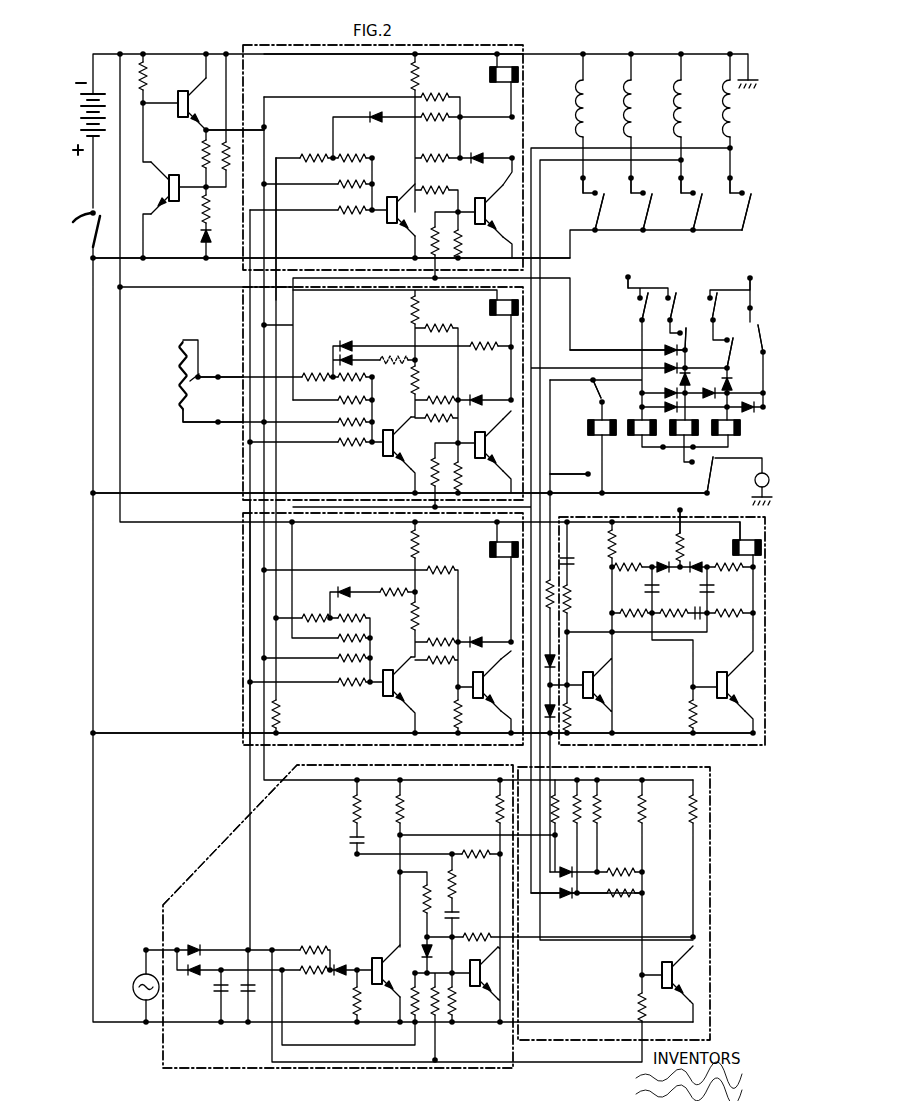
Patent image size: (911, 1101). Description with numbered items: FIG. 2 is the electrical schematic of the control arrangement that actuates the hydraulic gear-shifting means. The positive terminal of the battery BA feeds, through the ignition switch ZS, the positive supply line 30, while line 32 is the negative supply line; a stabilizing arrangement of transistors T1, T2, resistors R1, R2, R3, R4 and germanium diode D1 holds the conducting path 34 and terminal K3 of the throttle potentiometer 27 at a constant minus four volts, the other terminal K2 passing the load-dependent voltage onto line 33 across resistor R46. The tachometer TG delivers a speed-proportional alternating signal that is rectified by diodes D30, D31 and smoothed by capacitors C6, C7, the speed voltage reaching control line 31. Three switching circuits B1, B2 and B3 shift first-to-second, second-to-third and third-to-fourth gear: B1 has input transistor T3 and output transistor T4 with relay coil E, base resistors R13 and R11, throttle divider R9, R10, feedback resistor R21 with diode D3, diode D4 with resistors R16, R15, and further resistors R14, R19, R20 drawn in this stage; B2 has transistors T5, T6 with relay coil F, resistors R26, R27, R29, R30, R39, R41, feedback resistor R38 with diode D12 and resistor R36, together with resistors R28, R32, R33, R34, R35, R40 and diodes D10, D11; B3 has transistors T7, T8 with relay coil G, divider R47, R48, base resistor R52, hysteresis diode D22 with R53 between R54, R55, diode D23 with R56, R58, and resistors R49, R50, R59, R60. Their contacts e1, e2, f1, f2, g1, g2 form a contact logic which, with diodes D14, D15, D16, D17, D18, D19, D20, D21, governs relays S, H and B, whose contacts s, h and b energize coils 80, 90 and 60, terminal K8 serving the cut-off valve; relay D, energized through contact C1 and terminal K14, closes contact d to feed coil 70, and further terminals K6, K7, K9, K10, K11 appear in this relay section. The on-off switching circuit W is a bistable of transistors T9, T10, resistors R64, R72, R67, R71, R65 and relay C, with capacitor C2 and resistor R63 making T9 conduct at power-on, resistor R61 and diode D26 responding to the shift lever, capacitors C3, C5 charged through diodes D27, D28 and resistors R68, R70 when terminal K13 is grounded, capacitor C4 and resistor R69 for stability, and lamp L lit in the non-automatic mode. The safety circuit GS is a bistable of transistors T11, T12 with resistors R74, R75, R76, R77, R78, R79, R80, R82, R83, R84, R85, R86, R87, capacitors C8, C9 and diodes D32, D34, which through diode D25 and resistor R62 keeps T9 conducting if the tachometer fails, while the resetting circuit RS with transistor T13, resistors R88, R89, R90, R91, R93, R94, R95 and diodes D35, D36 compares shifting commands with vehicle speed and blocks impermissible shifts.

The battery BA is at (86, 115).
The ignition switch ZS is at (84, 214).
The resistor R1 is at (147, 74).
The resistor R2 is at (222, 160).
The resistor R3 is at (204, 149).
The resistor R4 is at (210, 206).
The stabilizing transistor T1 is at (190, 103).
The silicon control transistor T2 is at (173, 204).
The germanium diode D1 is at (211, 236).
The positive supply line 30 is at (183, 259).
The control line 31 is at (243, 599).
The negative supply line 32 is at (337, 54).
The conducting line 33 is at (278, 232).
The stabilized supply line 34 is at (267, 131).
The first switching circuit B1 is at (244, 45).
The second switching circuit B2 is at (242, 309).
The third switching circuit B3 is at (242, 716).
The resistor R14 is at (414, 65).
The resistor R15 is at (434, 94).
The feedback resistor R21 is at (435, 131).
The resistor R16 is at (446, 172).
The voltage divider resistor R9 is at (313, 153).
The voltage divider resistor R10 is at (350, 153).
The resistor R11 is at (335, 186).
The base resistor R13 is at (348, 215).
The resistor R19 is at (436, 232).
The resistor R20 is at (460, 238).
The feedback diode D3 is at (380, 122).
The diode D4 is at (479, 153).
The input transistor T3 is at (391, 224).
The output transistor T4 is at (486, 211).
The relay coil E is at (502, 84).
The variable resistor 27 is at (178, 378).
The terminal K2 is at (218, 374).
The terminal K3 is at (218, 425).
The resistor R26 is at (311, 375).
The resistor R27 is at (336, 381).
The resistor R28 is at (334, 404).
The resistor R29 is at (333, 430).
The base resistor R30 is at (345, 449).
The resistor R32 is at (480, 338).
The resistor R33 is at (382, 356).
The resistor R34 is at (412, 315).
The resistor R35 is at (430, 374).
The resistor R36 is at (439, 316).
The feedback resistor R38 is at (440, 391).
The resistor R39 is at (457, 412).
The resistor R40 is at (435, 461).
The resistor R41 is at (462, 476).
The diode D10 is at (336, 344).
The diode D11 is at (374, 364).
The diode D12 is at (490, 392).
The input transistor T5 is at (389, 460).
The output transistor T6 is at (481, 433).
The relay coil F is at (502, 317).
The resistor R46 is at (282, 708).
The voltage divider resistor R47 is at (308, 613).
The voltage divider resistor R48 is at (364, 608).
The resistor R49 is at (334, 643).
The resistor R50 is at (335, 663).
The base resistor R52 is at (348, 691).
The resistor R53 is at (381, 586).
The resistor R54 is at (420, 547).
The resistor R55 is at (429, 617).
The resistor R56 is at (439, 585).
The resistor R58 is at (458, 639).
The resistor R59 is at (437, 677).
The resistor R60 is at (454, 711).
The resistor R61 is at (547, 586).
The diode D22 is at (343, 584).
The diode D23 is at (493, 635).
The diode D25 is at (544, 712).
The diode D26 is at (556, 664).
The input transistor T7 is at (388, 701).
The output transistor T8 is at (473, 671).
The relay coil G is at (502, 558).
The terminal K13 is at (679, 511).
The terminal K14 is at (587, 474).
The capacitor C2 is at (574, 563).
The capacitor C3 is at (645, 590).
The capacitor C4 is at (695, 606).
The capacitor C5 is at (717, 590).
The resistor R63 is at (582, 600).
The base resistor R64 is at (572, 713).
The collector resistor R65 is at (610, 535).
The feedback resistor R67 is at (635, 620).
The protective resistor R68 is at (679, 542).
The resistor R69 is at (676, 620).
The resistor R70 is at (725, 563).
The feedback resistor R71 is at (727, 620).
The base resistor R72 is at (688, 709).
The diode D27 is at (659, 565).
The diode D28 is at (696, 564).
The transistor T9 is at (597, 689).
The transistor T10 is at (723, 703).
The relay C is at (762, 548).
The on-off switching circuit W is at (760, 740).
The coil of shifting valve 60 is at (734, 103).
The coil of pressure control valve 70 is at (587, 103).
The coil of cut-off valve 80 is at (635, 103).
The coil of turning valve 90 is at (685, 103).
The relay contact K6 is at (733, 176).
The relay contact K7 is at (586, 176).
The terminal K8 is at (634, 176).
The relay contact K9 is at (684, 176).
The terminal K10 is at (642, 264).
The terminal K11 is at (753, 276).
The relay contact d is at (604, 212).
The relay contact s is at (651, 212).
The relay contact h is at (702, 212).
The relay contact b is at (751, 212).
The normally closed contact g1 is at (738, 351).
The normally open contact g2 is at (632, 310).
The normally closed contact e1 is at (768, 325).
The normally open contact e2 is at (683, 311).
The normally closed contact f1 is at (693, 340).
The normally open contact f2 is at (724, 311).
The logic diode D14 is at (668, 348).
The logic diode D15 is at (664, 367).
The logic diode D16 is at (663, 394).
The logic diode D17 is at (664, 413).
The logic diode D18 is at (688, 375).
The logic diode D19 is at (712, 392).
The logic diode D20 is at (729, 384).
The logic diode D21 is at (753, 411).
The switch contact C1 is at (592, 387).
The pressure control relay D is at (602, 438).
The relay S is at (642, 438).
The relay H is at (684, 451).
The relay B is at (734, 437).
The lamp L is at (769, 477).
The resistor R74 is at (304, 946).
The resistor R75 is at (302, 978).
The resistor R76 is at (354, 811).
The divider resistor R77 is at (354, 1002).
The collector resistor R78 is at (403, 800).
The resistor R79 is at (411, 1000).
The resistor R80 is at (436, 1018).
The divider resistor R82 is at (477, 859).
The resistor R83 is at (454, 885).
The divider resistor R84 is at (422, 902).
The resistor R85 is at (490, 939).
The divider resistor R86 is at (454, 1001).
The collector resistor R87 is at (498, 808).
The resistor R88 is at (579, 815).
The resistor R89 is at (612, 794).
The resistor R90 is at (636, 877).
The resistor R91 is at (632, 897).
The resistor R93 is at (640, 1007).
The resistor R94 is at (659, 801).
The resistor R95 is at (696, 813).
The resistor R62 is at (557, 823).
The capacitor C6 is at (221, 997).
The smoothing capacitor C7 is at (248, 999).
The capacitor C8 is at (350, 843).
The capacitor C9 is at (458, 918).
The rectifier diode D30 is at (195, 944).
The rectifier diode D31 is at (194, 976).
The diode D32 is at (342, 965).
The diode D34 is at (424, 953).
The diode D35 is at (572, 878).
The diode D36 is at (564, 895).
The transistor T11 is at (376, 957).
The transistor T12 is at (482, 972).
The transistor T13 is at (661, 971).
The tachometer TG is at (140, 976).
The safety circuit GS is at (383, 1070).
The resetting circuit RS is at (711, 890).